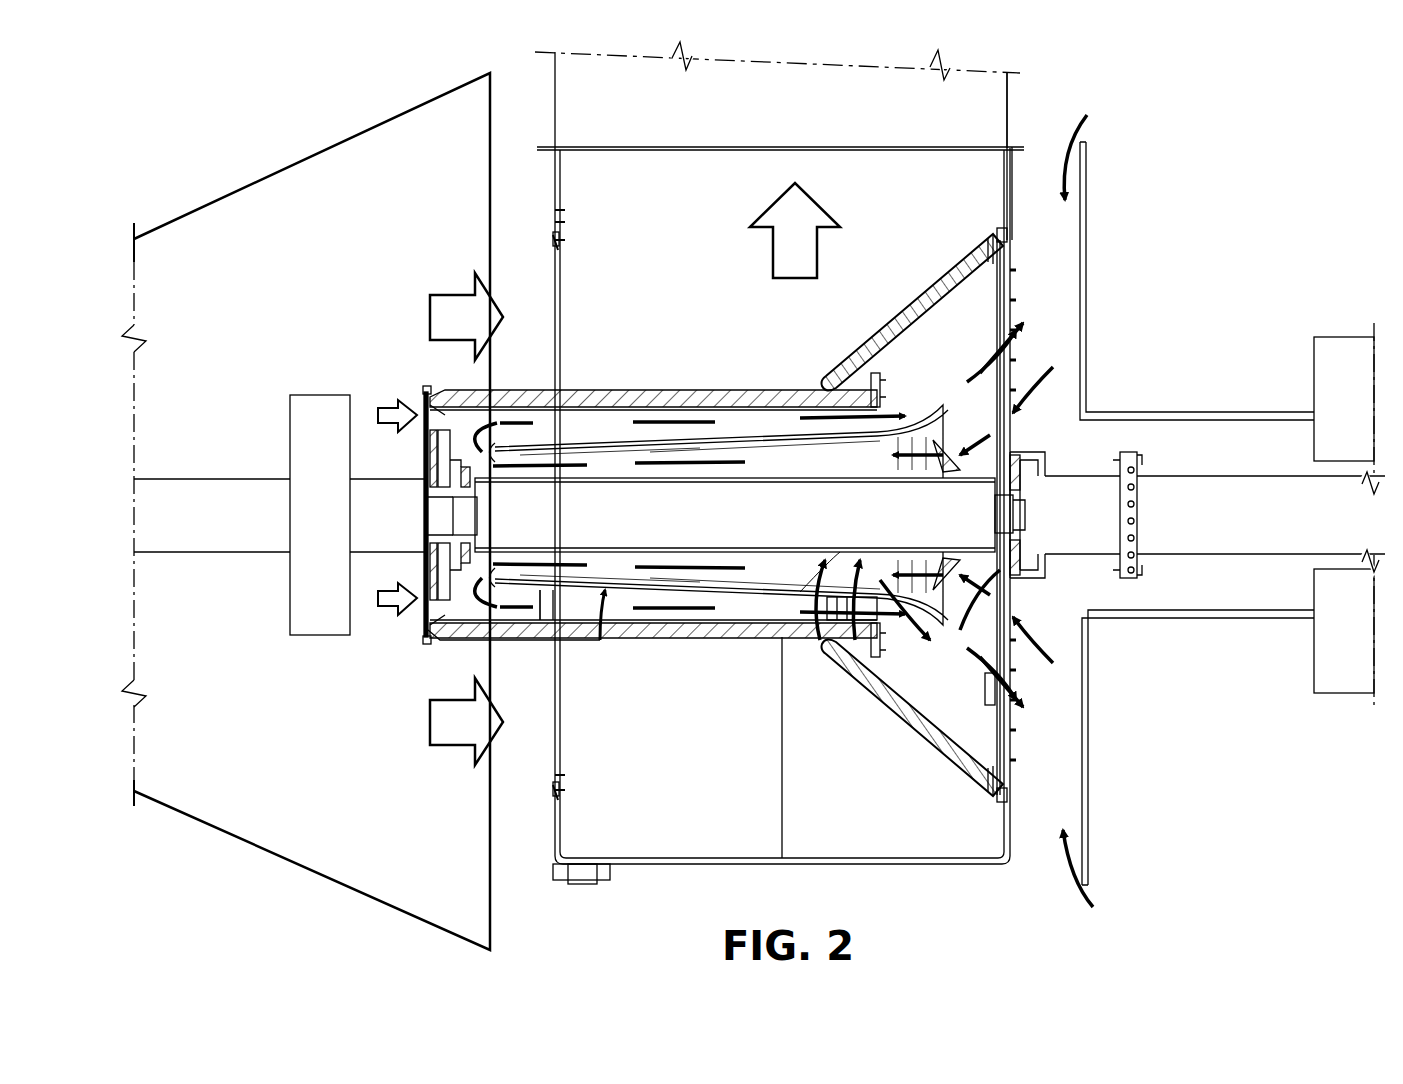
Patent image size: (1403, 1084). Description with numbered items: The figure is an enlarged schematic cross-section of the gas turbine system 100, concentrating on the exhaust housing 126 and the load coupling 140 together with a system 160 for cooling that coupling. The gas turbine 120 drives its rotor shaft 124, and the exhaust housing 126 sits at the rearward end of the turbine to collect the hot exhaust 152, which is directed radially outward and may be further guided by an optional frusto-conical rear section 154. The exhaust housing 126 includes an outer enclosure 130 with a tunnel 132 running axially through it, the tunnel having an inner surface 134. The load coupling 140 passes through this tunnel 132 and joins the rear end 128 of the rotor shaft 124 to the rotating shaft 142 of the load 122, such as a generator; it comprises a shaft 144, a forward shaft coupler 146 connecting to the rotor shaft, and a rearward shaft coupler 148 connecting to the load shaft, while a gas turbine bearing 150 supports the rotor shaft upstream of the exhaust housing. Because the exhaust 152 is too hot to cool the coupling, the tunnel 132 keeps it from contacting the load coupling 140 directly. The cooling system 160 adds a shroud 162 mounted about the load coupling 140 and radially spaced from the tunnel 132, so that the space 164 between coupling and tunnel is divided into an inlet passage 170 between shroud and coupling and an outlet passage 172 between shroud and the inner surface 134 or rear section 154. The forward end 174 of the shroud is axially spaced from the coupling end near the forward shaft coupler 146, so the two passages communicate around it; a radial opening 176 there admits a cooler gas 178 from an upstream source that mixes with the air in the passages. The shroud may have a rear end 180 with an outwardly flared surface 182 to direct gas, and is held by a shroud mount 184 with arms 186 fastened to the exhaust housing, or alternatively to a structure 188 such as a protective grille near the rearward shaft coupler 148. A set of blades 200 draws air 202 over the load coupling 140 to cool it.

The gas turbine (GT) system 100 is at (186, 128).
The gas turbine 120 is at (287, 163).
The load 122 is at (1322, 693).
The rotor shaft 124 is at (228, 535).
The exhaust housing 126 is at (1008, 112).
The rear end 128 is at (395, 497).
The outer enclosure 130 is at (970, 866).
The tunnel 132 is at (700, 385).
The inner surface 134 is at (652, 640).
The load coupling 140 is at (812, 560).
The rotating shaft 142 is at (1175, 558).
The shaft 144 is at (910, 580).
The forward shaft coupler 146 is at (425, 620).
The rearward shaft coupler 148 is at (1043, 462).
The gas turbine (GT) bearing 150 is at (308, 615).
The exhaust 152 is at (445, 305).
The frusto-conical rear section 154 is at (945, 740).
The system for cooling load coupling 160 is at (860, 660).
The shroud 162 is at (808, 430).
The space 164 is at (600, 640).
The inlet passage 170 is at (772, 455).
The outlet passage 172 is at (752, 425).
The forward end 174 is at (515, 555).
The radial opening 176 is at (428, 395).
The gas 178 is at (390, 408).
The rear end 180 is at (950, 620).
The outwardly flared surface 182 is at (927, 651).
The shroud mount 184 is at (540, 590).
The arms 186 is at (838, 552).
The structure 188 is at (1013, 722).
The set of blades 200 is at (965, 452).
The air 202 is at (1090, 118).